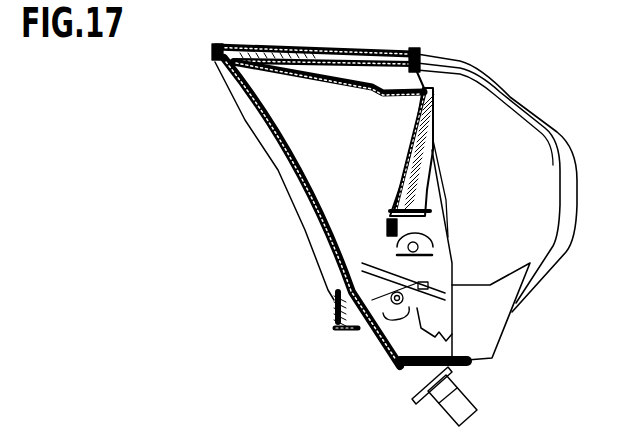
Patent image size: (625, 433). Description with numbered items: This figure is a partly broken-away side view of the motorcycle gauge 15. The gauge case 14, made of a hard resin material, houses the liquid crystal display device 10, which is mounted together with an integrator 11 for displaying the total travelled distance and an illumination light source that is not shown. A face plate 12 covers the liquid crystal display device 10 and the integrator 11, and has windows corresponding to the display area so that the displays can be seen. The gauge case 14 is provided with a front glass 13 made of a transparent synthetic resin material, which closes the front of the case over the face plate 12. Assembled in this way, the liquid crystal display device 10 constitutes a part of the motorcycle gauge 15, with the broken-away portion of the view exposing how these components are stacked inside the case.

The liquid crystal display device 10 is at (412, 160).
The integrator 11 is at (420, 307).
The face plate 12 is at (332, 75).
The front glass 13 is at (287, 145).
The gauge case 14 is at (513, 120).
The motorcycle gauge 15 is at (277, 243).